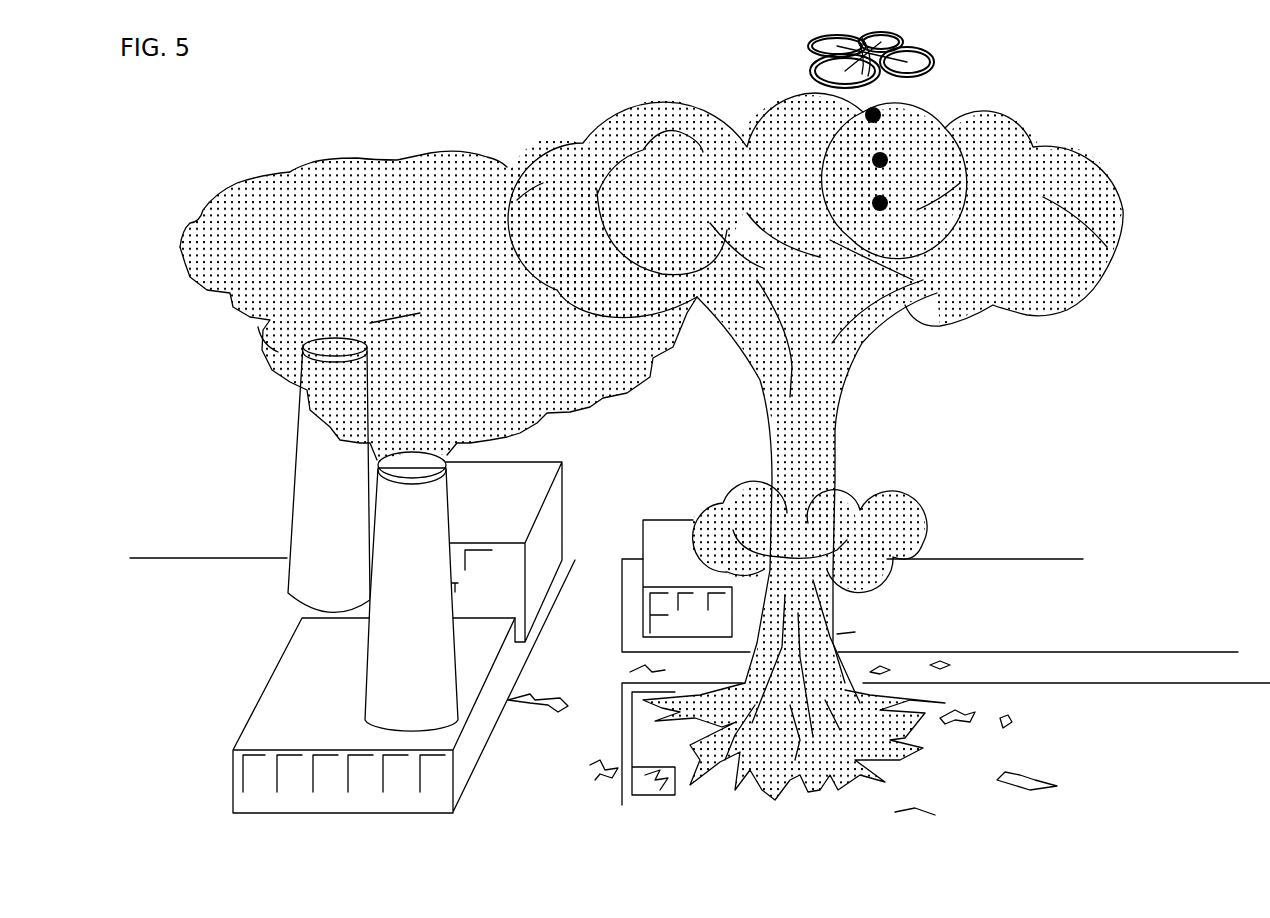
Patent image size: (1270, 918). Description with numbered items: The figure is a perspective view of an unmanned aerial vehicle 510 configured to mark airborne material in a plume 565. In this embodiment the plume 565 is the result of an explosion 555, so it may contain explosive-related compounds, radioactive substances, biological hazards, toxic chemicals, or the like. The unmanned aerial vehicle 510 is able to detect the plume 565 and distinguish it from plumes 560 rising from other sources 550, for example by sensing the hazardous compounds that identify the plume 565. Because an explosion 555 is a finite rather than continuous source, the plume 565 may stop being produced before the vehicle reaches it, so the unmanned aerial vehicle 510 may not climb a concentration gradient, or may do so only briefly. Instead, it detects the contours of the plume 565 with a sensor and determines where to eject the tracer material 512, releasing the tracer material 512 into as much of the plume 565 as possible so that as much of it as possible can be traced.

The unmanned aerial vehicle 510 is at (909, 38).
The tracer material 512 is at (873, 115).
The other sources 550 is at (475, 511).
The explosion 555 is at (992, 732).
The plumes from other sources 560 is at (406, 256).
The plume 565 is at (795, 196).